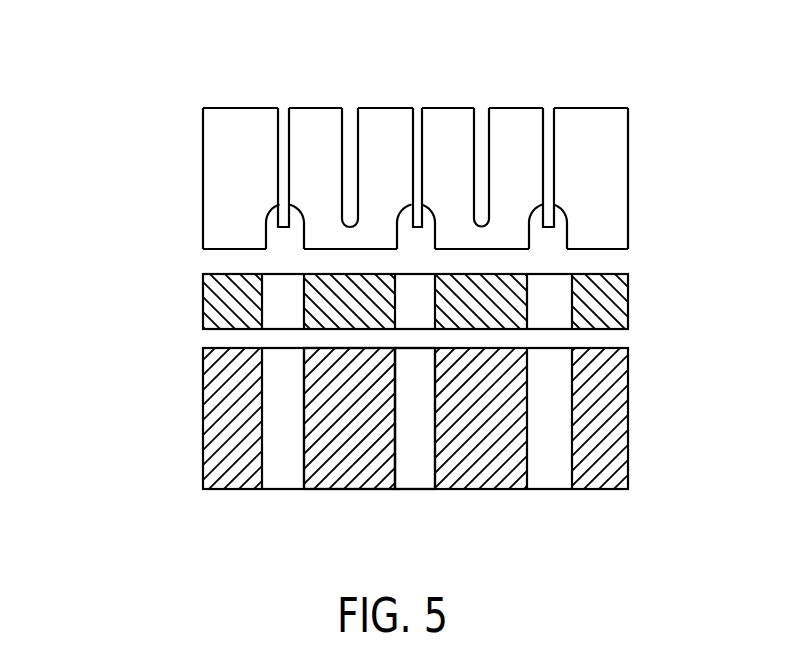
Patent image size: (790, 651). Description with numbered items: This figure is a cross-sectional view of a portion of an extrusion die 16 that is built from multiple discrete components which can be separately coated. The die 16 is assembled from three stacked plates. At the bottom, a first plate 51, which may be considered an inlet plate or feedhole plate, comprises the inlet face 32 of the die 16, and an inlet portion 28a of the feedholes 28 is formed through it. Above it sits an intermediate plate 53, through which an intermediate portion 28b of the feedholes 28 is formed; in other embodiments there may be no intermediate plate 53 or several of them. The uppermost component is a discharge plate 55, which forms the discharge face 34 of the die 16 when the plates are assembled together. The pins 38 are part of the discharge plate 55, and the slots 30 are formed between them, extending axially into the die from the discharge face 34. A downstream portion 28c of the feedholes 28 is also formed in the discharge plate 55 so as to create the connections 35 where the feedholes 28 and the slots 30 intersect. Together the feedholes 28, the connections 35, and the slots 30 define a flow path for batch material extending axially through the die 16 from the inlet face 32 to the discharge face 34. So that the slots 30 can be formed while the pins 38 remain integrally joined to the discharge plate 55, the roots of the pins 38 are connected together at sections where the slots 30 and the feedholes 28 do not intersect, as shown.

The extrusion die 16 is at (151, 71).
The feedholes 28 is at (412, 471).
The inlet portion of the feedholes 28a is at (572, 442).
The intermediate portion of the feedholes 28b is at (572, 313).
The downstream portion of the feedholes 28c is at (570, 228).
The slots 30 is at (284, 90).
The inlet face 32 is at (346, 507).
The discharge face 34 is at (449, 90).
The connections 35 is at (576, 186).
The pins 38 is at (380, 118).
The first plate 51 is at (218, 408).
The intermediate plate 53 is at (218, 307).
The discharge plate 55 is at (213, 182).